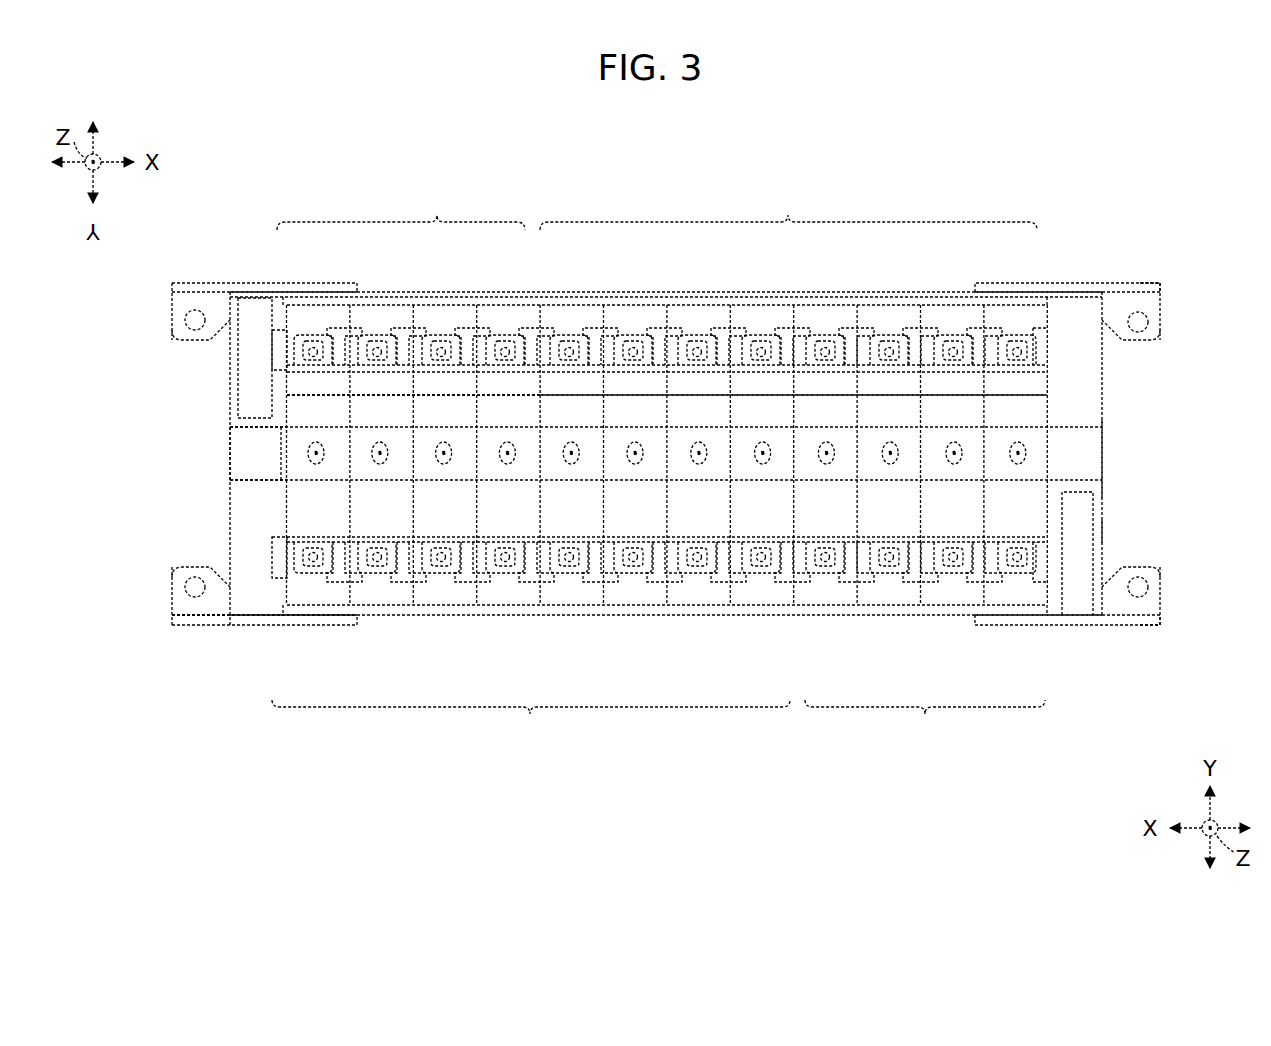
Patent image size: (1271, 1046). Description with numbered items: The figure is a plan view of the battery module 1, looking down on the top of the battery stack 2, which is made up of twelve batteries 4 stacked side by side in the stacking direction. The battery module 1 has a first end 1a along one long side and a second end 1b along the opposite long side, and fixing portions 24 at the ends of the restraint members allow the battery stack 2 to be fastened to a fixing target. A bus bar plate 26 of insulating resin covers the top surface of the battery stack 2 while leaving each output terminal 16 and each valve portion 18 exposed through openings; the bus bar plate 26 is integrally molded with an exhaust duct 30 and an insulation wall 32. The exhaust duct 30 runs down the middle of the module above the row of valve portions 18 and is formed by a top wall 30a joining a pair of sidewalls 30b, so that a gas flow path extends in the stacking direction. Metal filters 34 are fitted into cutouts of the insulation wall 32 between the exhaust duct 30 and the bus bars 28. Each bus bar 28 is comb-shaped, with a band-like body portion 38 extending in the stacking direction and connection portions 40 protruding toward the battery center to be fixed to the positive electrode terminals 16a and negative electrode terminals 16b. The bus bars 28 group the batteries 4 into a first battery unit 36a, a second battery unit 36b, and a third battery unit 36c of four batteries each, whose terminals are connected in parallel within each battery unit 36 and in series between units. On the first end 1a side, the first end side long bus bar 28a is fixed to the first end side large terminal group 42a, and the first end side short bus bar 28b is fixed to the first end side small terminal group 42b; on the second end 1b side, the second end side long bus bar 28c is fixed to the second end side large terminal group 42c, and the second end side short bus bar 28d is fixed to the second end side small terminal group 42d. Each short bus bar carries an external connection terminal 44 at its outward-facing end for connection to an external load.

The battery module 1 is at (676, 852).
The first end 1a is at (1172, 622).
The second end 1b is at (1172, 290).
The battery stack 2 is at (213, 632).
The battery 4 is at (1098, 545).
The output terminal 16 is at (659, 465).
The positive electrode terminal 16a is at (569, 333).
The negative electrode terminal 16b is at (313, 333).
The valve portion 18 is at (1035, 452).
The fixing portion 24 is at (178, 628).
The bus bar plate 26 is at (1108, 455).
The bus bar 28 is at (673, 479).
The first end side long bus bar 28a is at (283, 612).
The first end side short bus bar 28b is at (1090, 622).
The second end side long bus bar 28c is at (1047, 300).
The second end side short bus bar 28d is at (240, 280).
The exhaust duct 30 is at (244, 450).
The top wall 30a is at (283, 468).
The sidewall 30b is at (265, 417).
The insulation wall 32 is at (283, 512).
The metal filter 34 is at (737, 373).
The battery unit 36 is at (667, 277).
The first battery unit 36a is at (400, 395).
The second battery unit 36b is at (656, 395).
The third battery unit 36c is at (906, 395).
The body portion 38 is at (283, 300).
The connection portion 40 is at (280, 360).
The first end side large terminal group 42a is at (531, 725).
The first end side small terminal group 42b is at (925, 725).
The second end side large terminal group 42c is at (788, 213).
The second end side small terminal group 42d is at (401, 213).
The external connection terminal 44 is at (250, 393).